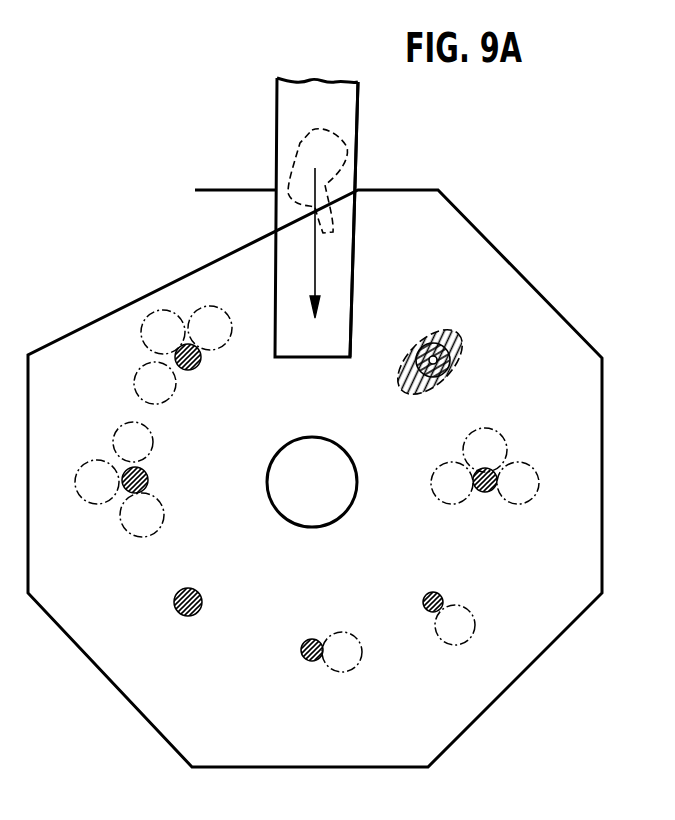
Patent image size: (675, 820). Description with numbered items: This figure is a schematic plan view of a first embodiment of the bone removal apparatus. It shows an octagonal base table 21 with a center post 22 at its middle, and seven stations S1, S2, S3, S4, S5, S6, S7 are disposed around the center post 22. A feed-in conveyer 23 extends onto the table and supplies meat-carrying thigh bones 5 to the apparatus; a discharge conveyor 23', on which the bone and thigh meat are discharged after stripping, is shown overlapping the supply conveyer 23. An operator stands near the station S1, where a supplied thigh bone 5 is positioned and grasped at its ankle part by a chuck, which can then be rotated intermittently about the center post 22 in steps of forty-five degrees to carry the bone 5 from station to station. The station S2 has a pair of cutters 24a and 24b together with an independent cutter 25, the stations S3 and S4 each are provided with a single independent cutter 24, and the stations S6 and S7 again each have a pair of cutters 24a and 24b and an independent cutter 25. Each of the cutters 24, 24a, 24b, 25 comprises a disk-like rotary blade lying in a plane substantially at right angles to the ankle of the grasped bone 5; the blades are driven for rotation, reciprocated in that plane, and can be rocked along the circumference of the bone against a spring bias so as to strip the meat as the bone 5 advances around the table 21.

The base table 21 is at (447, 197).
The center post 22 is at (338, 437).
The conveyer 23 is at (291, 217).
The discharge conveyor 23' is at (389, 219).
The meat-carrying thigh bone 5 is at (292, 175).
The independent cutter 24 is at (342, 631).
The cutter 24a is at (143, 373).
The cutter 24b is at (210, 306).
The independent cutter 25 is at (143, 343).
The station S1 is at (493, 326).
The station S2 is at (528, 478).
The station S3 is at (462, 635).
The station S4 is at (314, 673).
The station S5 is at (173, 616).
The station S6 is at (91, 484).
The station S7 is at (168, 319).